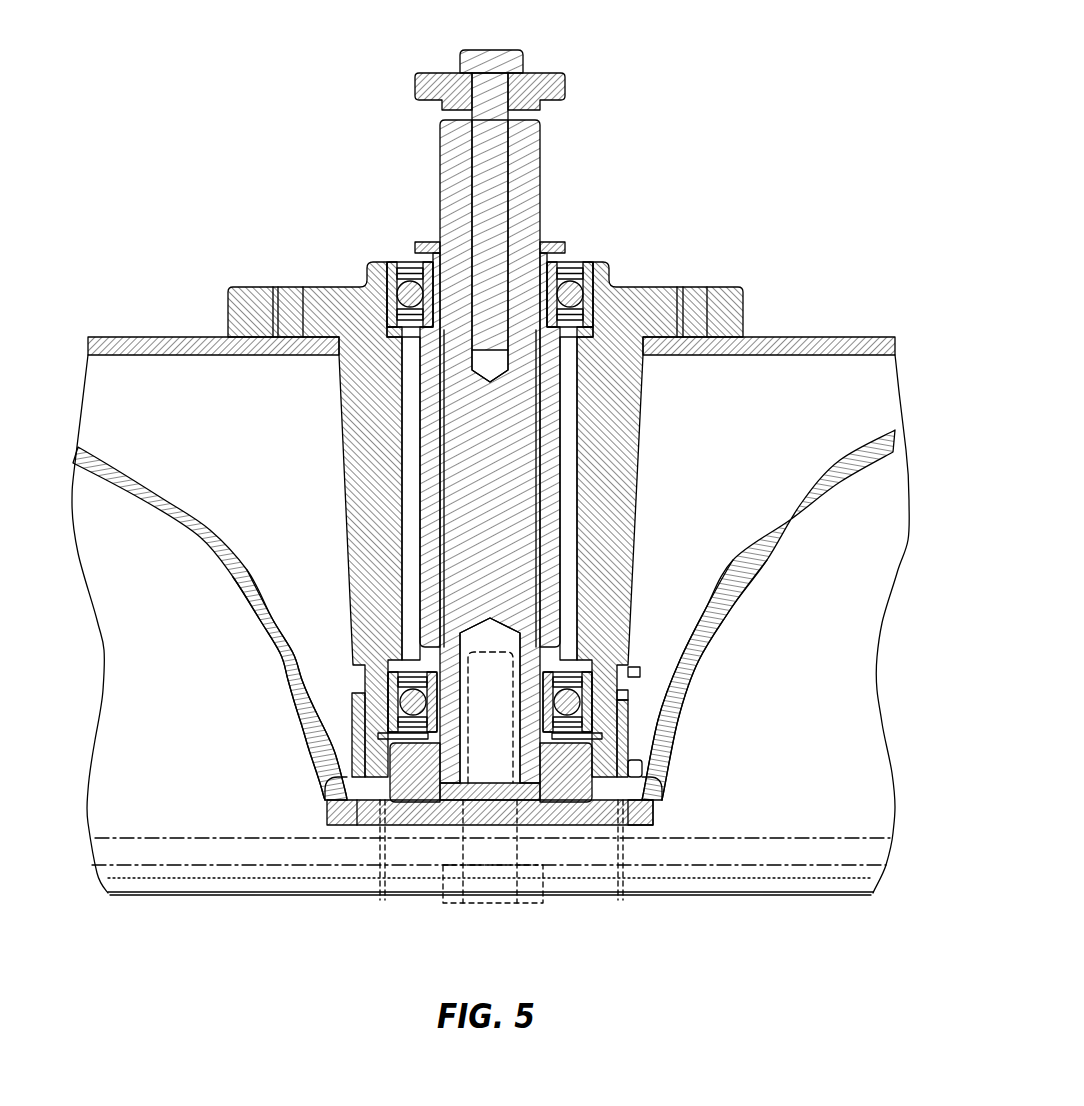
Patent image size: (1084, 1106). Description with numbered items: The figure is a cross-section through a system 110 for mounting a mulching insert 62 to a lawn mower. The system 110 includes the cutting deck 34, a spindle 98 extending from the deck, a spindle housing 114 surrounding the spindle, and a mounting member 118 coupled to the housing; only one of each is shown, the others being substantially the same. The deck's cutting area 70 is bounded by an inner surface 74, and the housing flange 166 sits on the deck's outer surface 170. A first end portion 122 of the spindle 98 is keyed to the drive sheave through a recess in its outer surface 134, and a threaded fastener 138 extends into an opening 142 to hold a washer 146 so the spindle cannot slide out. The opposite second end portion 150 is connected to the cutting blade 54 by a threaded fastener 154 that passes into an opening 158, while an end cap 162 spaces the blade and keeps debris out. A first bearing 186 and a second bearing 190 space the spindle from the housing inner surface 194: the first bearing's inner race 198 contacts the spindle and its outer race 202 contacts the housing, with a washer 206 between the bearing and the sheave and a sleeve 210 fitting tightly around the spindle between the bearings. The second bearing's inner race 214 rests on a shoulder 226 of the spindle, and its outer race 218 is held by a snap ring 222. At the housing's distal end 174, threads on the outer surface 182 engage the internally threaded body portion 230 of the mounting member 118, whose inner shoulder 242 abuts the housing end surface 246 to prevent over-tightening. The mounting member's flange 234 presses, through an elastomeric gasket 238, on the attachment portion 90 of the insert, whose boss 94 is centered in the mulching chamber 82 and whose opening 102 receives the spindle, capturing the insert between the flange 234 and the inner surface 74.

The system for mounting the mulching insert 110 is at (727, 130).
The cutting area 70 is at (856, 418).
The mulching chamber 82 is at (133, 683).
The inner surface 74 is at (882, 340).
The cutting deck 34 is at (120, 335).
The outer surface 170 is at (790, 337).
The cutting blade 54 is at (165, 878).
The mulching insert 62 is at (158, 518).
The boss 94 is at (222, 578).
The opening 102 is at (330, 785).
The attachment portion 90 is at (790, 540).
The outer surface 182 is at (612, 672).
The inner shoulder 242 is at (638, 825).
The spindle 98 is at (570, 435).
The flange 166 is at (725, 290).
The spindle housing 114 is at (622, 540).
The inner race 198 is at (425, 332).
The inner surface 194 is at (560, 485).
The outer race 202 is at (400, 265).
The first bearing 186 is at (566, 272).
The second bearing 190 is at (400, 700).
The outer race 218 is at (628, 673).
The snap ring 222 is at (380, 736).
The washer 206 is at (425, 244).
The sleeve 210 is at (430, 465).
The inner race 214 is at (595, 622).
The first end portion 122 is at (542, 155).
The outer surface 134 is at (445, 520).
The end surface 246 is at (452, 786).
The opening 158 is at (470, 648).
The end cap 162 is at (418, 786).
The opening 142 is at (482, 180).
The threaded fastener 138 is at (493, 50).
The washer 146 is at (420, 85).
The second end portion 150 is at (430, 786).
The mounting member 118 is at (612, 805).
The distal end 174 is at (628, 740).
The shoulder 226 is at (630, 697).
The body portion 230 is at (642, 766).
The gasket 238 is at (652, 803).
The flange 234 is at (340, 826).
The threaded fastener 154 is at (535, 900).